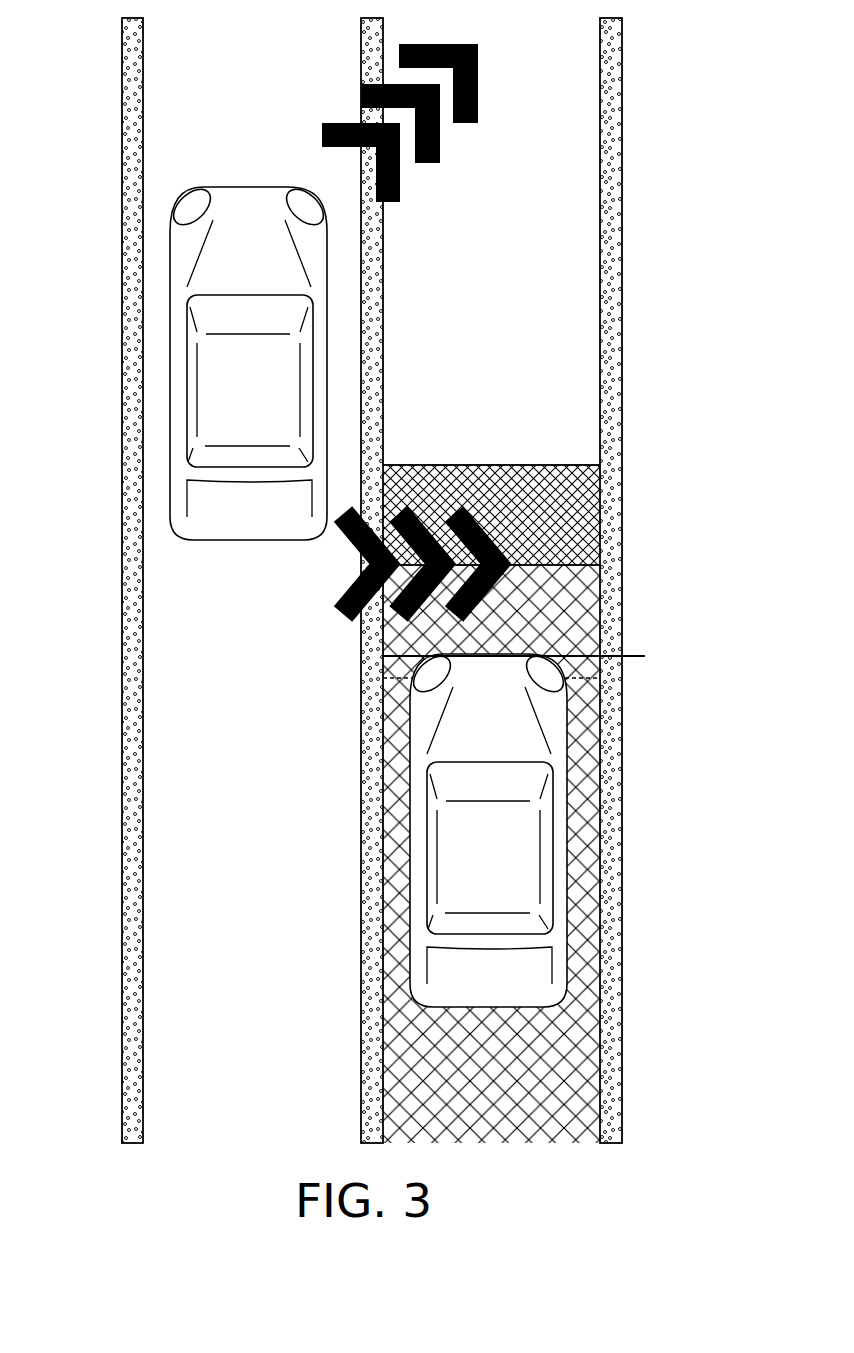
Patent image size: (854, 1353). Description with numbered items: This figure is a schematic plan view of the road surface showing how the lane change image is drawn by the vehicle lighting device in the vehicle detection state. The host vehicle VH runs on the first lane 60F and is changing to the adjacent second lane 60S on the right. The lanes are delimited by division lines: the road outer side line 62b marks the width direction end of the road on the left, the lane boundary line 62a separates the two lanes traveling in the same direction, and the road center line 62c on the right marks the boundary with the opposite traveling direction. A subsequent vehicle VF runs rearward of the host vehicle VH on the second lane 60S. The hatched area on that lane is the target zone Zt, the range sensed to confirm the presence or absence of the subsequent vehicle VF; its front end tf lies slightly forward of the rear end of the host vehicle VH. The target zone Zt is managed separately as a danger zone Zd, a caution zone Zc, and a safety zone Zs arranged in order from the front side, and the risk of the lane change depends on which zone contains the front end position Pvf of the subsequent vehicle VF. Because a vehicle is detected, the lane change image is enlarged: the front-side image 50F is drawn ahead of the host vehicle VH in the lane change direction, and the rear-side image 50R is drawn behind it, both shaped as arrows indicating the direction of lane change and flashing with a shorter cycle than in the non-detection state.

The lane boundary line 62a is at (361, 1058).
The road outer side line 62b is at (122, 133).
The road center line 62c is at (622, 165).
The first lane 60F is at (260, 114).
The second lane 60S is at (528, 272).
The front-side image 50F is at (440, 138).
The rear-side image 50R is at (337, 601).
The host vehicle VH is at (210, 541).
The subsequent vehicle VF is at (410, 905).
The front end of the target zone tf is at (571, 465).
The target zone Zt is at (562, 804).
The danger zone Zd is at (610, 490).
The caution zone Zc is at (588, 622).
The safety zone Zs is at (600, 848).
The front end position of the subsequent vehicle Pvf is at (533, 656).